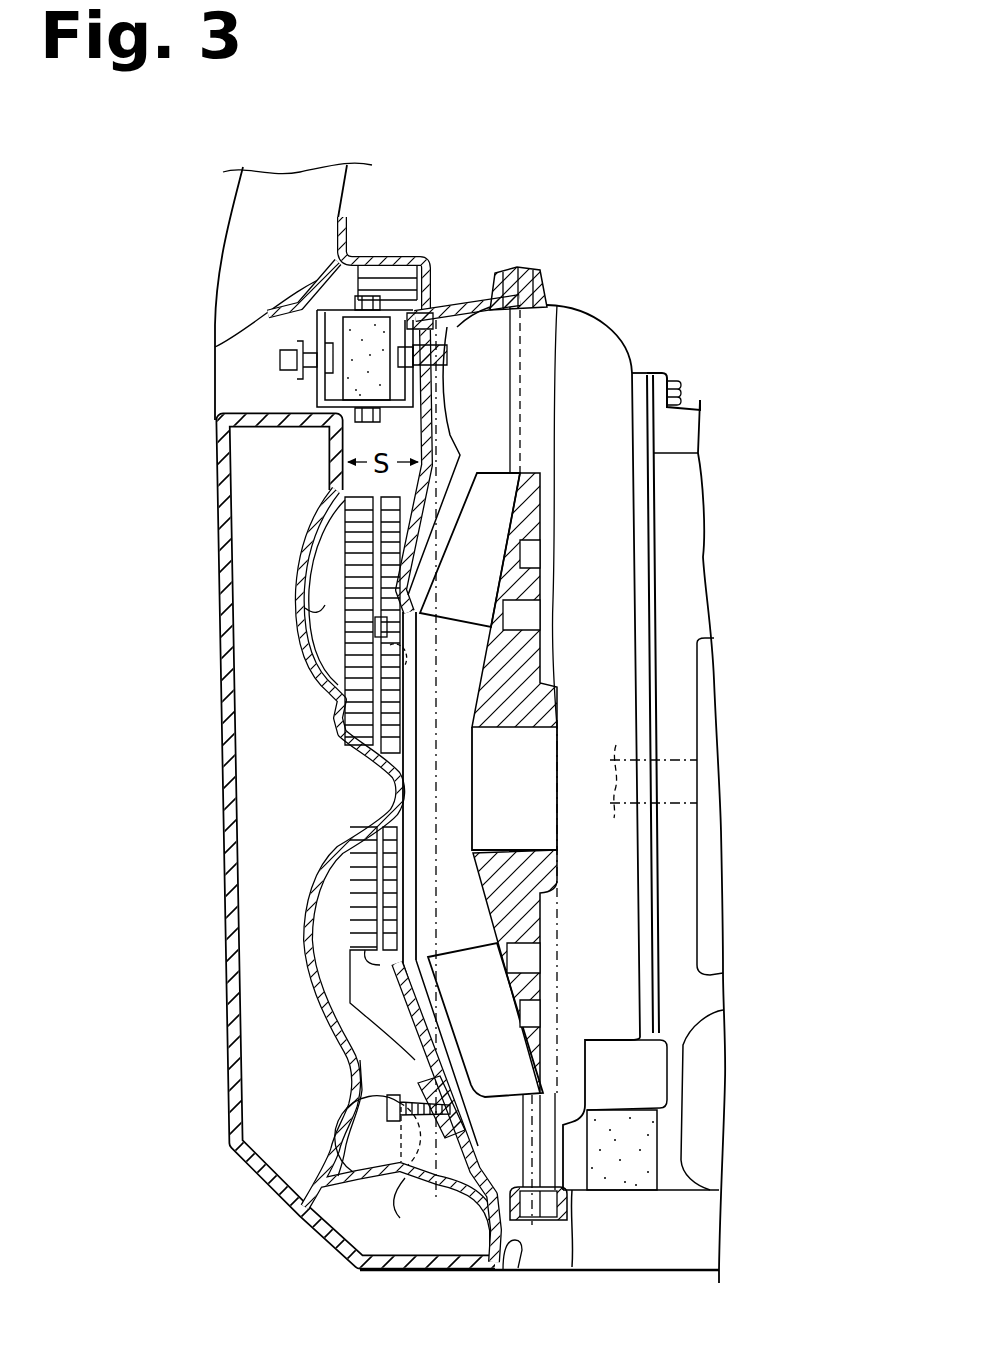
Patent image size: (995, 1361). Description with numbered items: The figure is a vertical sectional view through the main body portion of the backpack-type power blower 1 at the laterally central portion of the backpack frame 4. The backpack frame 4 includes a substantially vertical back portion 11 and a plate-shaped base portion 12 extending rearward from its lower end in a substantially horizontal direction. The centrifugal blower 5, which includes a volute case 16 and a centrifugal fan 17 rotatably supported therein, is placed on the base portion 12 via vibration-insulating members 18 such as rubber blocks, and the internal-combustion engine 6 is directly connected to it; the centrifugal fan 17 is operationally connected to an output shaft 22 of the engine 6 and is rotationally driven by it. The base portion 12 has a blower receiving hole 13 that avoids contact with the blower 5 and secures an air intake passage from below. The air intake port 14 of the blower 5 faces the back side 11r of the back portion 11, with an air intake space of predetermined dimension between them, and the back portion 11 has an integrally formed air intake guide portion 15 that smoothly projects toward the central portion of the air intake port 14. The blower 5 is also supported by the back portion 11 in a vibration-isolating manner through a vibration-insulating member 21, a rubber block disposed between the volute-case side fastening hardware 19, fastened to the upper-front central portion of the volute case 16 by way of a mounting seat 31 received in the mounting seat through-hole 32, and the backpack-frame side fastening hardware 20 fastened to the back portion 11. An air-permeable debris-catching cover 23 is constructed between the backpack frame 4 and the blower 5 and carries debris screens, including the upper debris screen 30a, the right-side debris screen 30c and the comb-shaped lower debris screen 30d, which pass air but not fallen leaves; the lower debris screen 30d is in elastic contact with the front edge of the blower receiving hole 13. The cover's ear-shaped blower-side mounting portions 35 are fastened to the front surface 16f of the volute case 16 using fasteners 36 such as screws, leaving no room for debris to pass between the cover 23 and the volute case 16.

The backpack-type power blower 1 is at (622, 185).
The backpack frame 4 is at (202, 306).
The centrifugal blower 5 is at (600, 310).
The internal-combustion engine 6 is at (686, 397).
The back portion 11 is at (212, 433).
The back side 11r is at (305, 610).
The base portion 12 is at (625, 1274).
The blower receiving hole 13 is at (506, 1274).
The air intake port 14 is at (400, 960).
The air intake guide portion 15 is at (400, 790).
The volute case 16 is at (471, 300).
The front surface 16f is at (420, 1055).
The centrifugal fan 17 is at (485, 478).
The vibration-insulating member 18 is at (637, 1143).
The volute-case side fastening hardware 19 is at (390, 408).
The backpack-frame side fastening hardware 20 is at (338, 308).
The vibration-insulating member 21 is at (362, 340).
The output shaft 22 is at (670, 760).
The debris-catching cover 23 is at (422, 250).
The upper debris screen 30a is at (388, 252).
The right-side debris screen 30c is at (362, 582).
The lower debris screen 30d is at (476, 1165).
The mounting seat 31 is at (430, 313).
The mounting seat through-hole 32 is at (445, 366).
The blower-side mounting portion 35 is at (332, 715).
The fastener 36 is at (388, 1106).